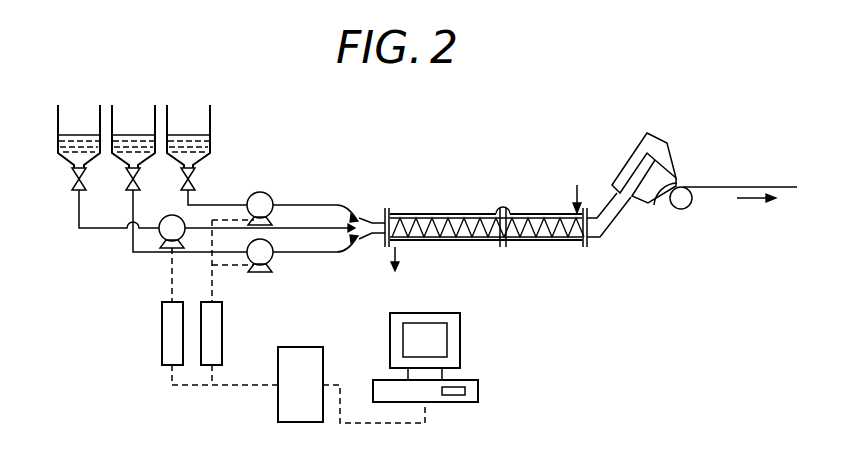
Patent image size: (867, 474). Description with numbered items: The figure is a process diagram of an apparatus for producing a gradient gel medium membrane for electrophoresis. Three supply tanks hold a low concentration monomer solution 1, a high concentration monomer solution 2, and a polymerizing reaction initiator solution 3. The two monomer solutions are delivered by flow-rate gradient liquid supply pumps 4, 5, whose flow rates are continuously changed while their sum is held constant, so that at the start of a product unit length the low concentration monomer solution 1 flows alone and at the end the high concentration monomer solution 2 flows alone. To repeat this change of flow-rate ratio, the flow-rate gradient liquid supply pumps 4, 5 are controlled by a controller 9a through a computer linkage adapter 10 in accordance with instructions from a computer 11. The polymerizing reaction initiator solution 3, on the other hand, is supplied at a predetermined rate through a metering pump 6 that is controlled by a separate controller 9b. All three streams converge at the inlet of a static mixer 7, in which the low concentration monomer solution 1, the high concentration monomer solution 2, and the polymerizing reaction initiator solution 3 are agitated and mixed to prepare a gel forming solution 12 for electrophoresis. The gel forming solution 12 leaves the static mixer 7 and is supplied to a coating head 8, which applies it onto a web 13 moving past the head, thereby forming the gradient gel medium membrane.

The low concentration monomer solution 1 is at (133, 147).
The high concentration monomer solution 2 is at (188, 147).
The polymerizing reaction initiator solution 3 is at (79, 147).
The flow-rate gradient liquid supply pump 4 is at (272, 259).
The flow-rate gradient liquid supply pump 5 is at (262, 192).
The metering pump 6 is at (160, 236).
The static mixer 7 is at (431, 211).
The coating head 8 is at (664, 141).
The controller 9a is at (223, 312).
The controller 9b is at (161, 313).
The computer linkage adapter 10 is at (313, 347).
The computer 11 is at (461, 322).
The gel forming solution for electrophoresis 12 is at (614, 221).
The web 13 is at (719, 186).